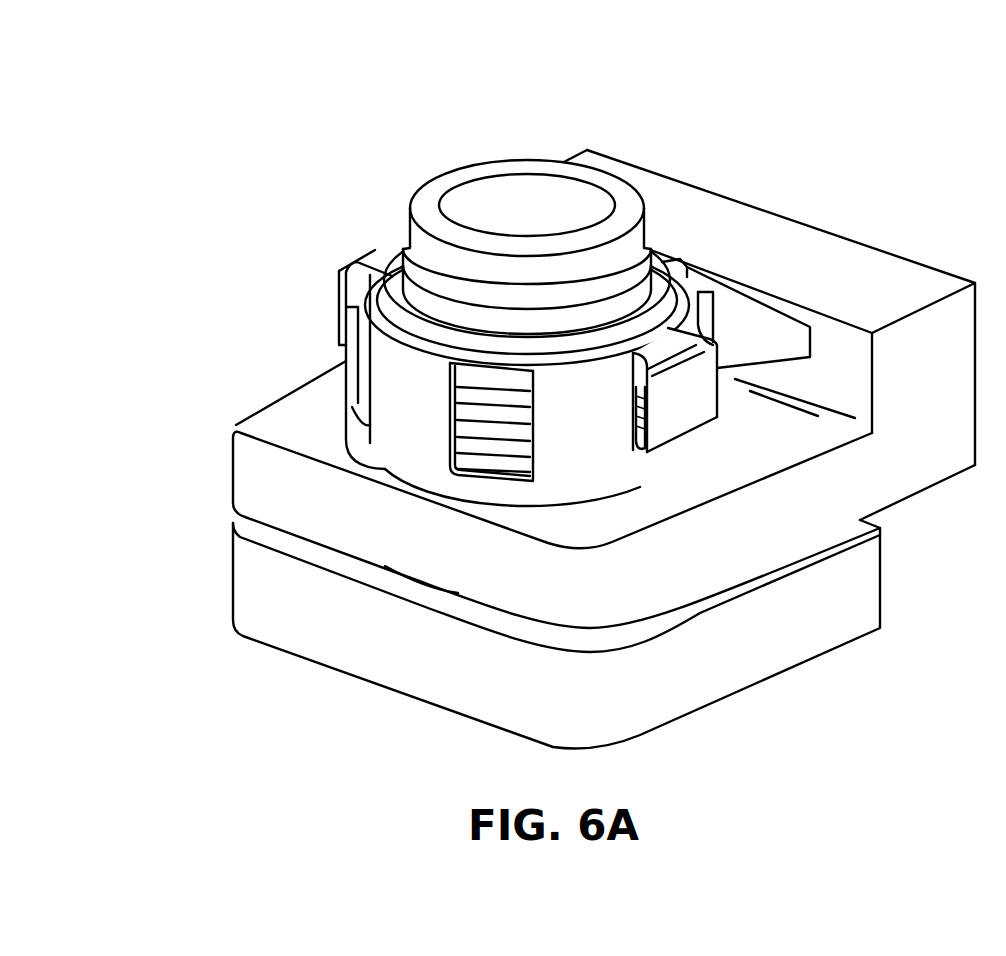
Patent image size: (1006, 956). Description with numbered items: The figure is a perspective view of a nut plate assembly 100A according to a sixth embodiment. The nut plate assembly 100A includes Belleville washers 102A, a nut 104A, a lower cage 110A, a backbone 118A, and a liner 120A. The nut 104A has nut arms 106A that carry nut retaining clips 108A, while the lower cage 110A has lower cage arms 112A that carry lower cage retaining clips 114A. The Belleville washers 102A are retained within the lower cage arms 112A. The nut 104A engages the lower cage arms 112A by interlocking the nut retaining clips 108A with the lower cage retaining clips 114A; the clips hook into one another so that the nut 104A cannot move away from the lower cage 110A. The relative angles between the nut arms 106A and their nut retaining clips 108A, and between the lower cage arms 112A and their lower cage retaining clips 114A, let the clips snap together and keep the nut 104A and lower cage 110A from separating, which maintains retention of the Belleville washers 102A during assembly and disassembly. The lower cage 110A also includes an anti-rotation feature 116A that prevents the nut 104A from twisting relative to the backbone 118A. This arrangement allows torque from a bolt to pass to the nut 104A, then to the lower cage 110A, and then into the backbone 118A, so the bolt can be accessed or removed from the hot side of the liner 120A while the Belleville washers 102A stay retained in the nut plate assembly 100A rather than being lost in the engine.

The nut plate assembly 100A is at (478, 135).
The Belleville washers 102A is at (479, 426).
The nut 104A is at (409, 197).
The nut arms 106A is at (668, 412).
The nut retaining clips 108A is at (628, 466).
The lower cage 110A is at (344, 377).
The lower cage arms 112A is at (369, 403).
The lower cage retaining clips 114A is at (630, 431).
The anti-rotation feature 116A is at (742, 325).
The backbone 118A is at (857, 240).
The liner 120A is at (231, 580).